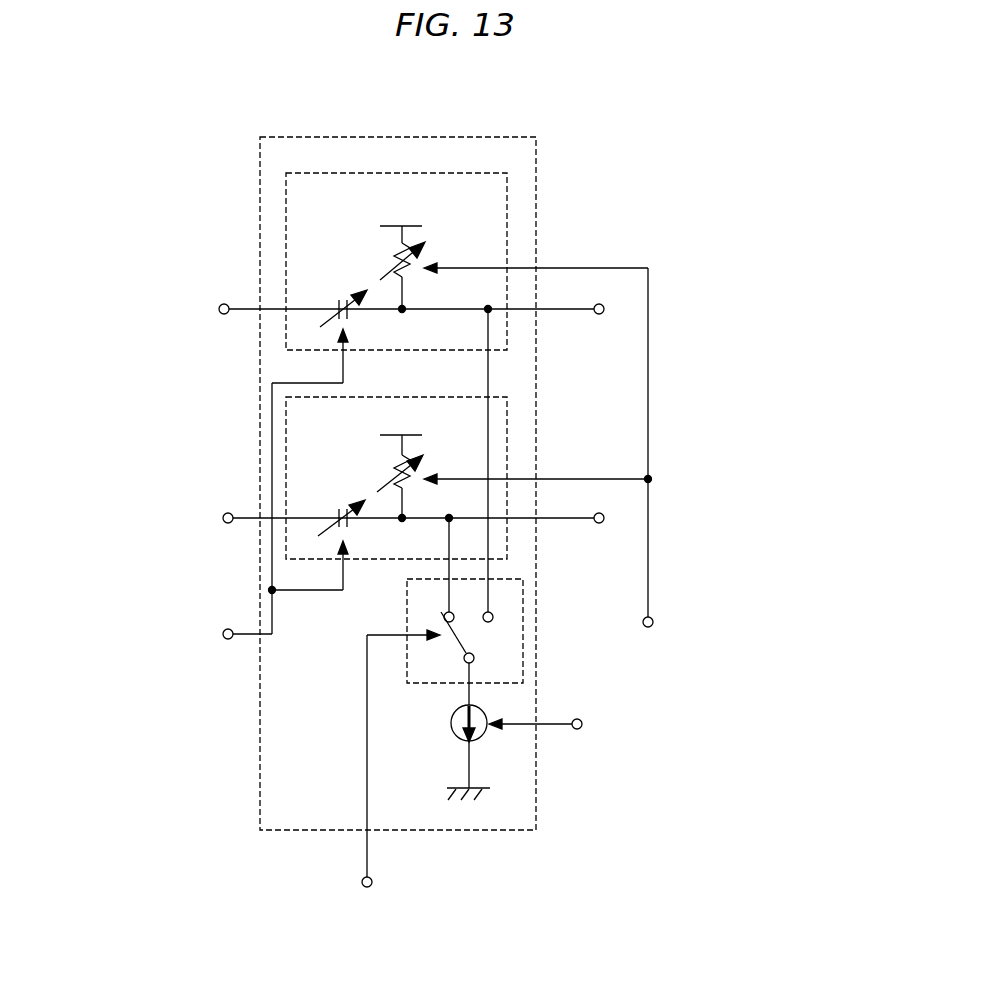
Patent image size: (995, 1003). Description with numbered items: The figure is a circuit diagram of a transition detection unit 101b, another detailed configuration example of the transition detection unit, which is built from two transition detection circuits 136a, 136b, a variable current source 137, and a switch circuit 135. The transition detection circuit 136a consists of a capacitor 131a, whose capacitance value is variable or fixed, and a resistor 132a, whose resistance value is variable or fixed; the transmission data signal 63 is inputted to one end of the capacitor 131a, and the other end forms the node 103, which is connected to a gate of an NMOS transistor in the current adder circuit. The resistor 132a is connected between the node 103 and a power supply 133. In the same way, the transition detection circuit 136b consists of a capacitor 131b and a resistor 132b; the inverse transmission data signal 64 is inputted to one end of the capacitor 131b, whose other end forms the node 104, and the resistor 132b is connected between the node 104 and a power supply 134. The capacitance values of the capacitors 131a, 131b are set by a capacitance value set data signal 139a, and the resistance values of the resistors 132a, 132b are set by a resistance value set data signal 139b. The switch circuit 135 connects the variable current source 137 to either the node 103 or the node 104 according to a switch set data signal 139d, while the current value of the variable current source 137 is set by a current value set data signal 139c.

The transmission data signal 63 is at (107, 284).
The inverse transmission data signal 64 is at (113, 484).
The transition detection unit 101b is at (489, 831).
The node 103 is at (582, 317).
The node 104 is at (583, 525).
The capacitor 131a is at (342, 298).
The capacitor 131b is at (340, 510).
The resistor 132a is at (392, 243).
The resistor 132b is at (412, 451).
The power supply 133 is at (407, 223).
The power supply 134 is at (392, 434).
The switch circuit 135 is at (524, 597).
The transition detection circuit 136a is at (484, 172).
The transition detection circuit 136b is at (508, 412).
The variable current source 137 is at (451, 720).
The capacitance value set data signal 139a is at (122, 667).
The resistance value set data signal 139b is at (646, 660).
The current value set data signal 139c is at (708, 742).
The switch set data signal 139d is at (365, 927).